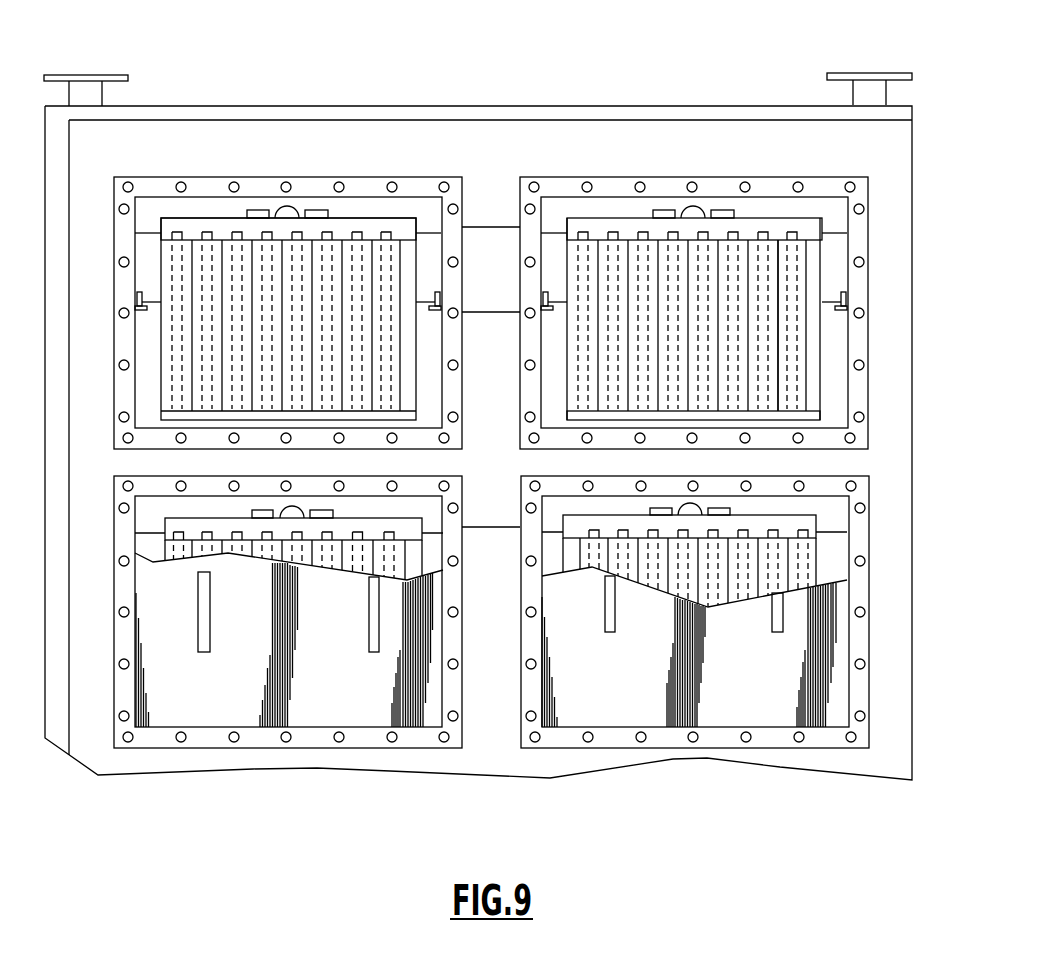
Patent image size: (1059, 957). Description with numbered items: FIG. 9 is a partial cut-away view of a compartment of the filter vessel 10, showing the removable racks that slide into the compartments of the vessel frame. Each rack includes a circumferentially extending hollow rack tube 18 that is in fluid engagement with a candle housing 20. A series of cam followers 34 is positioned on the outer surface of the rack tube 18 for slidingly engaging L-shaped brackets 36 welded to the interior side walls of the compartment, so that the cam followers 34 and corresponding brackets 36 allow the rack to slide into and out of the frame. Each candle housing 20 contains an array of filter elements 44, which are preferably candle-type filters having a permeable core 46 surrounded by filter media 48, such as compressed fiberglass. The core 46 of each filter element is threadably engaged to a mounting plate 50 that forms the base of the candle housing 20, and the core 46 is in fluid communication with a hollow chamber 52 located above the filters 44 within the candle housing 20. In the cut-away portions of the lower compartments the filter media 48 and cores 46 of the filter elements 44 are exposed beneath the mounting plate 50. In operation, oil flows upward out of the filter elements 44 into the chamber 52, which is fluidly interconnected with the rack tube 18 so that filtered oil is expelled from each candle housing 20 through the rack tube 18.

The filter vessel 10 is at (678, 70).
The rack tube 18 is at (694, 296).
The candle housing 20 is at (749, 285).
The cam follower 34 is at (525, 267).
The L-shaped bracket 36 is at (513, 286).
The filter element 44 is at (761, 415).
The permeable core 46 is at (846, 327).
The filter media 48 is at (843, 321).
The mounting plate 50 is at (762, 313).
The hollow chamber 52 is at (710, 193).